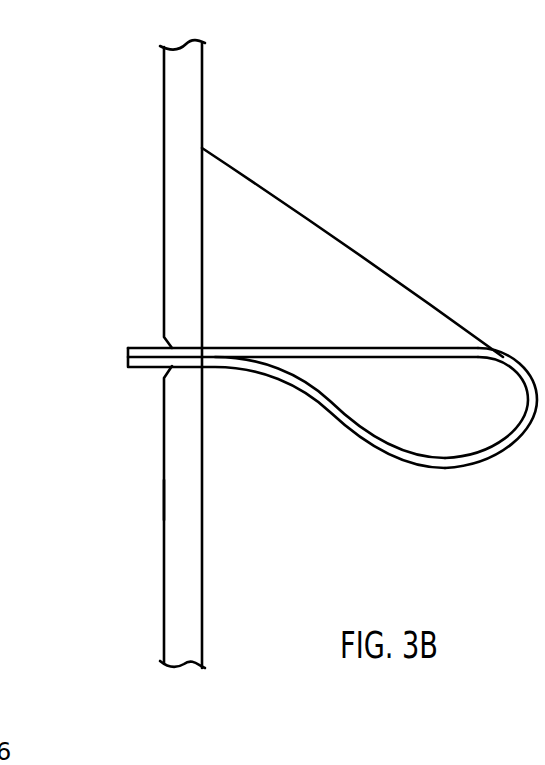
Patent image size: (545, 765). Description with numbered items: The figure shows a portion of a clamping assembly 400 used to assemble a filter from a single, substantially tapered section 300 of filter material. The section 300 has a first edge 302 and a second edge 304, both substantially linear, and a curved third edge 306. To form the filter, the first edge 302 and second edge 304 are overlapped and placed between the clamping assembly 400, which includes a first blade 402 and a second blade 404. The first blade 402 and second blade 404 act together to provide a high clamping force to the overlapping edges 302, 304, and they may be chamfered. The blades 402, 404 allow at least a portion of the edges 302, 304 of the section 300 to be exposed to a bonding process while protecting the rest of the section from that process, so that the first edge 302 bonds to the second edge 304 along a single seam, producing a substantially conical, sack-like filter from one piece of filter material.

The clamping assembly 400 is at (145, 130).
The first blade 402 is at (173, 188).
The second blade 404 is at (170, 500).
The section of filter material 300 is at (367, 272).
The first edge 302 is at (125, 352).
The second edge 304 is at (125, 363).
The third edge 306 is at (512, 447).